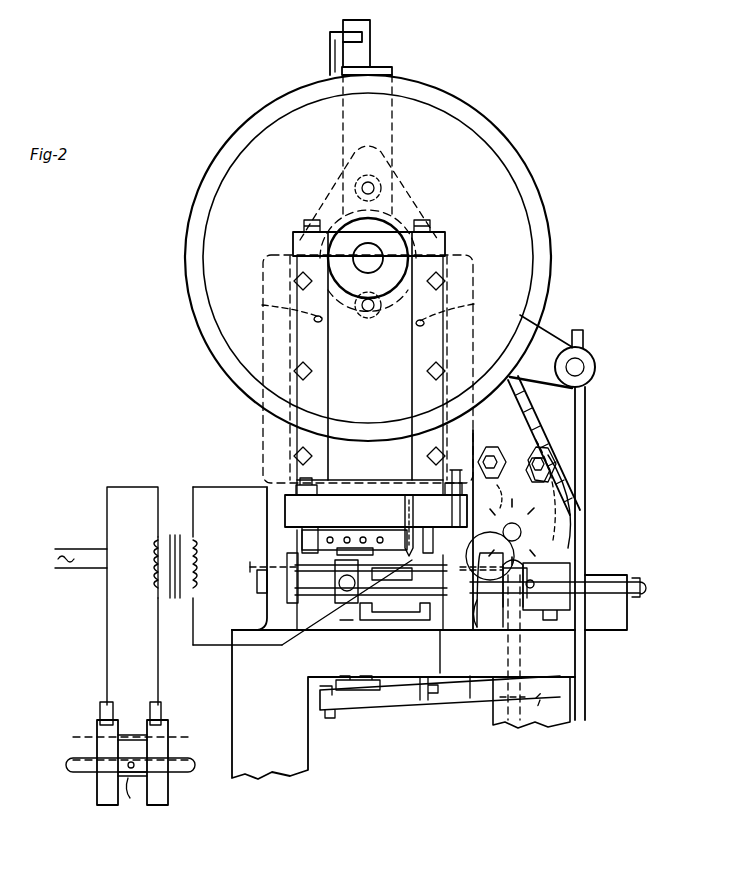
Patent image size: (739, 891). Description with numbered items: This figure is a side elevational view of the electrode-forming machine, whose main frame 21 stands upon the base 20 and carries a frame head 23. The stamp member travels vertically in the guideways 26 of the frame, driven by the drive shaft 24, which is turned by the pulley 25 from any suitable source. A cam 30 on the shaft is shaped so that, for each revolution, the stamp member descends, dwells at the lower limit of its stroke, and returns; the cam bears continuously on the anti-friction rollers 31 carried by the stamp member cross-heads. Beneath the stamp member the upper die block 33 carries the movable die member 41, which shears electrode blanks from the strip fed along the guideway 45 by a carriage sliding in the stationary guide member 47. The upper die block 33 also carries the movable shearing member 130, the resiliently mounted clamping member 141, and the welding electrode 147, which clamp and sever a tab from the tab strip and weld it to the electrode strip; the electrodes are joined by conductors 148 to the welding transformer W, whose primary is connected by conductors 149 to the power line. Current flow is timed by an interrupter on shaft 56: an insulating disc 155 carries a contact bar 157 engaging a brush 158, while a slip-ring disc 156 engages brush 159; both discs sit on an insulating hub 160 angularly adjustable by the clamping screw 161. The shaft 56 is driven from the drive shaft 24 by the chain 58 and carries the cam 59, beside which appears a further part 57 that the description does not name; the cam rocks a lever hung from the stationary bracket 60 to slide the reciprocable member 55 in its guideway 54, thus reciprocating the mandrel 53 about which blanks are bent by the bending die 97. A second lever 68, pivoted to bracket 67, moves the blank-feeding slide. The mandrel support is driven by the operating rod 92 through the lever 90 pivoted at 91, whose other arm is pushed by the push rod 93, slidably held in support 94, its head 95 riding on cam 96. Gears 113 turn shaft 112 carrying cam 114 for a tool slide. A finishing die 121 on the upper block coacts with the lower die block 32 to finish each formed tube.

The base 20 is at (236, 672).
The main frame 21 is at (466, 436).
The frame head 23 is at (388, 66).
The drive shaft 24 is at (368, 260).
The pulley 25 is at (530, 188).
The guideways 26 is at (369, 308).
The cam 30 is at (402, 210).
The anti-friction rollers 31 is at (380, 182).
The lower die block 32 is at (346, 628).
The upper die block 33 is at (362, 518).
The movable die member 41 is at (378, 500).
The guideway 45 is at (380, 580).
The stationary guide member 47 is at (386, 628).
The mandrel 53 is at (256, 566).
The guideway 54 is at (625, 606).
The reciprocable member 55 is at (598, 580).
The shaft 56 is at (550, 522).
The cam 57 is at (540, 552).
The chain 58 is at (524, 428).
The cam 59 is at (590, 556).
The stationary bracket 60 is at (506, 470).
The bracket 67 is at (536, 446).
The oscillatable lever 68 is at (548, 462).
The lever 90 is at (392, 708).
The pivot 91 is at (434, 704).
The operating rod 92 is at (348, 698).
The push rod 93 is at (522, 658).
The support 94 is at (470, 630).
The head 95 is at (480, 570).
The cam 96 is at (497, 496).
The bending die 97 is at (355, 540).
The shaft 112 is at (256, 588).
The gears 113 is at (548, 470).
The cam 114 is at (338, 598).
The finishing die 121 is at (324, 534).
The movable shearing member 130 is at (436, 545).
The clamping member 141 is at (447, 500).
The welding electrode 147 is at (414, 540).
The conductors 148 is at (203, 487).
The conductors 149 is at (75, 545).
The disc 155 is at (100, 790).
The disc 156 is at (160, 792).
The contact bar 157 is at (102, 734).
The brush 158 is at (98, 710).
The brush 159 is at (166, 713).
The hub 160 is at (134, 796).
The clamping screw 161 is at (132, 760).
The welding transformer W is at (182, 530).